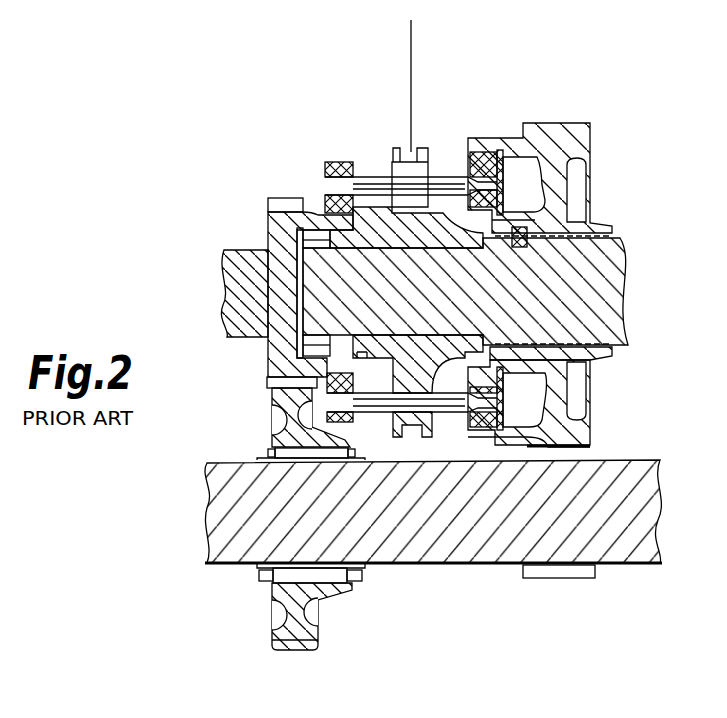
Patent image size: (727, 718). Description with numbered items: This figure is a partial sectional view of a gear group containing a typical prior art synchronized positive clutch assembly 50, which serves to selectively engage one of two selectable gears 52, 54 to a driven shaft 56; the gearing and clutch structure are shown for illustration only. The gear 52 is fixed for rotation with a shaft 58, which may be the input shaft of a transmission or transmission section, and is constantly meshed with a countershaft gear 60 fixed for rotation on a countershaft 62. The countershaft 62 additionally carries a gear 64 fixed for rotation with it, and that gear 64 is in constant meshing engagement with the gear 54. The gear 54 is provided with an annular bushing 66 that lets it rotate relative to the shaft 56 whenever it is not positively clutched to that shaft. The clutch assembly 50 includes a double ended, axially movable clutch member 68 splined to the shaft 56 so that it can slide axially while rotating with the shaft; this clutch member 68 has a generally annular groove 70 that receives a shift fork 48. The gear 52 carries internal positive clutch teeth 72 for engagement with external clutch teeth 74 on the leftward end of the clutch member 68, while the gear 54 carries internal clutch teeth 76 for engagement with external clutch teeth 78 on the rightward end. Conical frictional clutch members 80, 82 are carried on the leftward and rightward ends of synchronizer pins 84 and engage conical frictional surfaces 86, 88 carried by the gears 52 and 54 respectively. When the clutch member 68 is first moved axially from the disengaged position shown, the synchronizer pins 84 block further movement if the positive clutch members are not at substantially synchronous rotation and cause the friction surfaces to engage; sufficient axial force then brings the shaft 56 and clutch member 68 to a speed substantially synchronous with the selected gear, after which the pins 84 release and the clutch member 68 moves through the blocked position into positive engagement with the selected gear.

The shift fork 48 is at (411, 50).
The synchronized positive clutch assembly 50 is at (448, 98).
The gear 52 is at (278, 220).
The gear 54 is at (555, 145).
The driven shaft 56 is at (470, 309).
The shaft 58 is at (245, 258).
The countershaft gear 60 is at (298, 445).
The countershaft 62 is at (399, 514).
The gear 64 is at (580, 580).
The annular bushing 66 is at (612, 257).
The clutch member 68 is at (378, 240).
The annular groove 70 is at (412, 432).
The internal positive clutch teeth 72 is at (320, 228).
The external clutch teeth 74 is at (335, 262).
The internal clutch teeth 76 is at (505, 224).
The external clutch teeth 78 is at (522, 366).
The conical frictional clutch member 80 is at (334, 162).
The conical frictional clutch member 82 is at (520, 408).
The synchronizer pins 84 is at (448, 178).
The conical frictional surface 86 is at (327, 398).
The conical frictional surface 88 is at (475, 447).